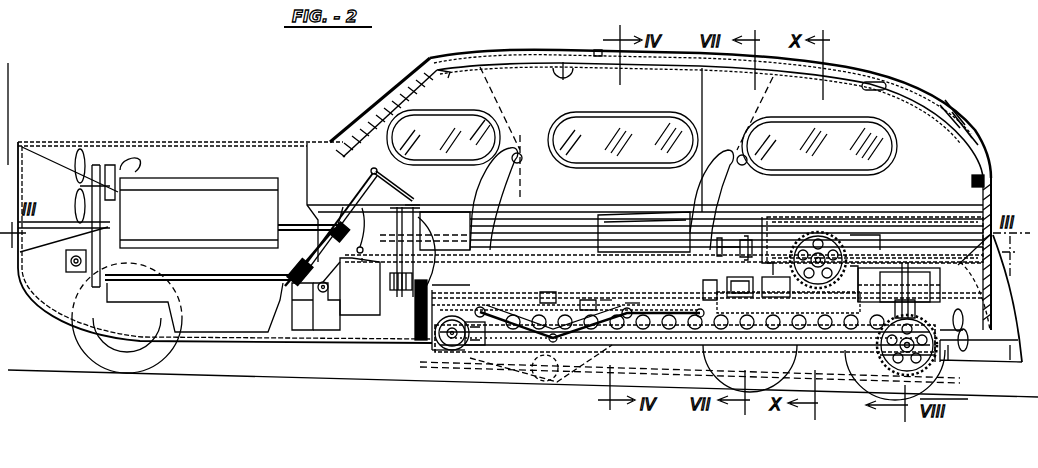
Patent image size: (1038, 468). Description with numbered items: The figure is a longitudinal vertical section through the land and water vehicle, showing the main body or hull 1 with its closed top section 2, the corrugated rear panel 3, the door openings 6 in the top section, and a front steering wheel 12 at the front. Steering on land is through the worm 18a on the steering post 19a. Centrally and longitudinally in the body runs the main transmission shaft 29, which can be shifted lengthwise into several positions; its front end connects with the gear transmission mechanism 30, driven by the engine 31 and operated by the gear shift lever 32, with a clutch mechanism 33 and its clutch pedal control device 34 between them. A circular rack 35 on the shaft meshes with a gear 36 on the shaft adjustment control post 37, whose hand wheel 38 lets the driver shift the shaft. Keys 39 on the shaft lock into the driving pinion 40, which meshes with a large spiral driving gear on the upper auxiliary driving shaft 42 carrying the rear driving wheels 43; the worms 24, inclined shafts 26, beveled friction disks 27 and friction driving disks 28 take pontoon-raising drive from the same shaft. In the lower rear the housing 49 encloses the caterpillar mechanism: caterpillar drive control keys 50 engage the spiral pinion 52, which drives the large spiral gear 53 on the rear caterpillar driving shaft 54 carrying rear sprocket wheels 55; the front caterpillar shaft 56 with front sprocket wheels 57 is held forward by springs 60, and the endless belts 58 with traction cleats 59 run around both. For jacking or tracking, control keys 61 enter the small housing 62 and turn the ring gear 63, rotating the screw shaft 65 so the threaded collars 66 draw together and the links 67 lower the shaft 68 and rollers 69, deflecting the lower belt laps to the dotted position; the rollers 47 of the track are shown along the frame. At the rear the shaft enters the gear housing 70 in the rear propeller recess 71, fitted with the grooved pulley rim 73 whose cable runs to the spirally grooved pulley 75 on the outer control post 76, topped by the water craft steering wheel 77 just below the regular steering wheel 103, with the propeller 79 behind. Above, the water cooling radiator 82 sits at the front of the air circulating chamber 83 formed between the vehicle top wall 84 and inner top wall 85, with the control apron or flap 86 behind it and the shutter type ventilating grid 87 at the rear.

The main body or hull 1 is at (213, 143).
The top section 2 is at (872, 82).
The corrugated rear panel 3 is at (995, 184).
The door openings 6 is at (563, 62).
The front steering wheel 12 is at (170, 352).
The worm 18a is at (290, 263).
The steering post 19a is at (310, 242).
The worms 24 is at (745, 238).
The inclined shafts 26 is at (763, 240).
The beveled friction disks 27 is at (753, 287).
The friction driving disks 28 is at (692, 255).
The main transmission shaft 29 is at (707, 280).
The gear transmission mechanism 30 is at (362, 316).
The engine 31 is at (199, 213).
The gear shift lever 32 is at (372, 262).
The clutch mechanism 33 is at (305, 318).
The clutch pedal control device 34 is at (300, 285).
The circular rack 35 is at (409, 291).
The gear 36 is at (405, 228).
The shaft adjustment control post 37 is at (420, 216).
The hand wheel 38 is at (415, 192).
The keys 39 is at (896, 263).
The driving pinion 40 is at (788, 292).
The upper auxiliary driving shaft 42 is at (818, 256).
The rear driving wheels 43 is at (870, 232).
The track rollers 47 is at (860, 366).
The housing 49 is at (668, 240).
The caterpillar drive control keys 50 is at (905, 262).
The spiral pinion 52 is at (899, 277).
The large spiral gear 53 is at (950, 358).
The rear caterpillar driving shaft 54 is at (920, 350).
The rear sprocket wheels 55 is at (903, 350).
The front caterpillar shaft 56 is at (452, 342).
The front sprocket wheels 57 is at (447, 345).
The endless belts 58 is at (668, 352).
The traction cleats 59 is at (426, 344).
The springs 60 is at (473, 346).
The control keys 61 is at (460, 280).
The small housing 62 is at (424, 246).
The ring gear 63 is at (425, 287).
The screw shaft 65 is at (632, 303).
The threaded collars 66 is at (606, 298).
The links 67 is at (578, 332).
The shaft 68 is at (546, 292).
The rollers 69 is at (550, 342).
The gear housing 70 is at (958, 283).
The rear propeller recess 71 is at (974, 176).
The grooved pulley rim 73 is at (992, 190).
The spirally grooved pulley 75 is at (358, 262).
The outer control post 76 is at (364, 207).
The water craft steering wheel 77 is at (378, 168).
The rear propeller 79 is at (1008, 360).
The water cooling radiator 82 is at (392, 80).
The air circulating chamber 83 is at (520, 54).
The vehicle top wall 84 is at (598, 50).
The inner top wall 85 is at (528, 70).
The control apron or flap 86 is at (448, 72).
The shutter type ventilating grid 87 is at (950, 105).
The regular steering wheel 103 is at (392, 166).